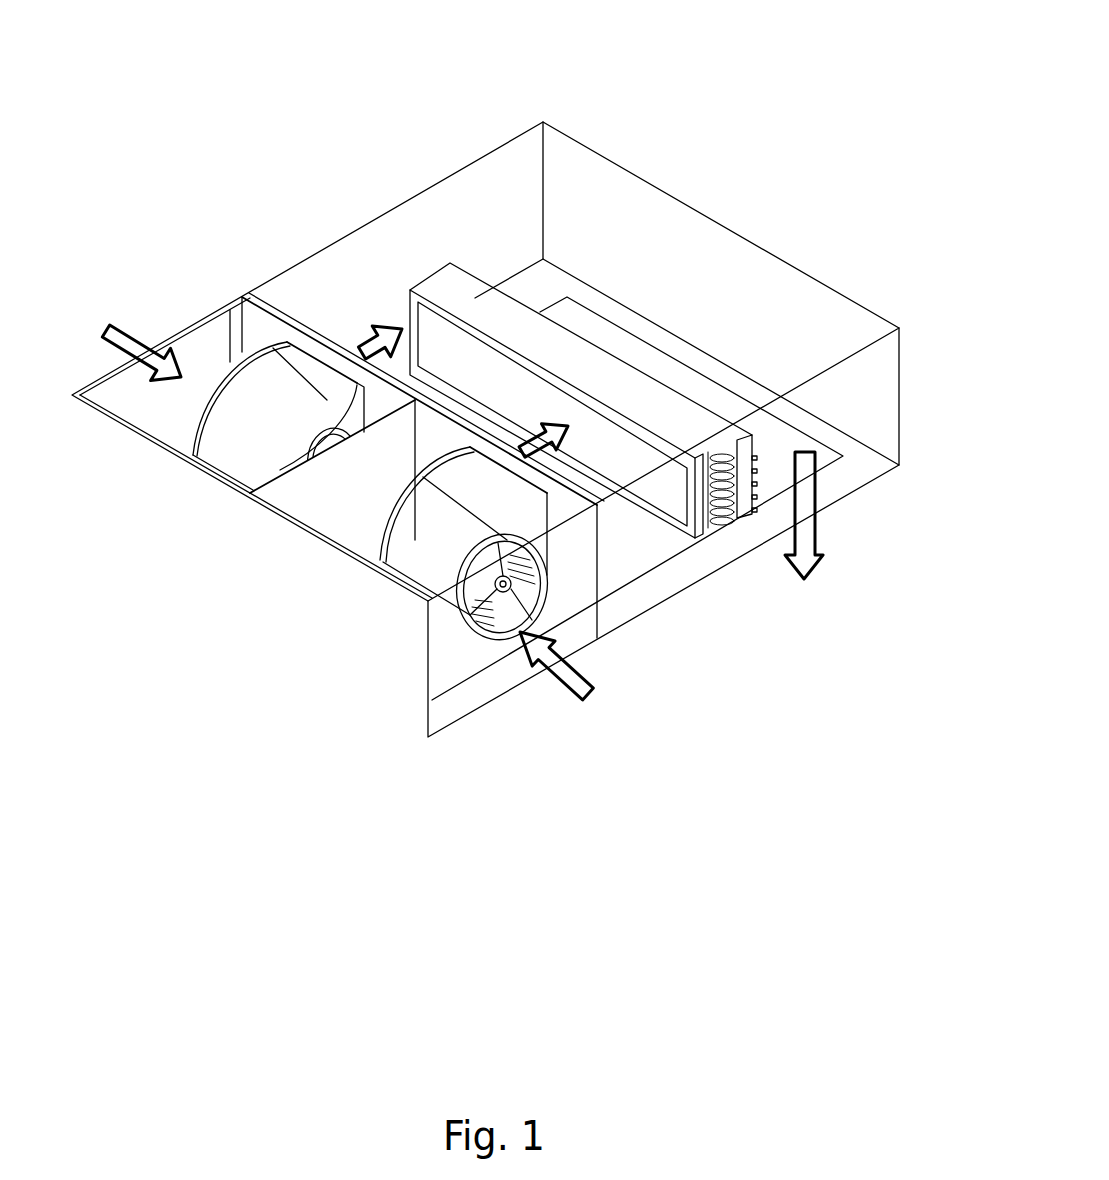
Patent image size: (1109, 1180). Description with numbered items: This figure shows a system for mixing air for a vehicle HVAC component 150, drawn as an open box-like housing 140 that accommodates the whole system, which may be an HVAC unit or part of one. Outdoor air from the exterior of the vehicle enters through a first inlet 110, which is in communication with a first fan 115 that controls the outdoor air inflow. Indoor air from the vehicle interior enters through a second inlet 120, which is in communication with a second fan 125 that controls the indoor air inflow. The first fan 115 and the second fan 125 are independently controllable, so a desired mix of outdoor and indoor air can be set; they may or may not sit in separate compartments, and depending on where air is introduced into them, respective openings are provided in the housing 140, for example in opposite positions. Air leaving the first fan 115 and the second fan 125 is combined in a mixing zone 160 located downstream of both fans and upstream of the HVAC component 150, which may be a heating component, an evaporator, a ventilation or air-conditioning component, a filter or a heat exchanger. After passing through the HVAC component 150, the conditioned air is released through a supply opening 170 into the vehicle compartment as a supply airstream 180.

The first inlet 110 is at (580, 693).
The first fan 115 is at (513, 590).
The second inlet 120 is at (127, 343).
The second fan 125 is at (252, 392).
The housing 140 is at (553, 187).
The vehicle HVAC component 150 is at (470, 300).
The mixing zone 160 is at (450, 398).
The supply opening 170 is at (654, 360).
The supply airstream 180 is at (800, 548).